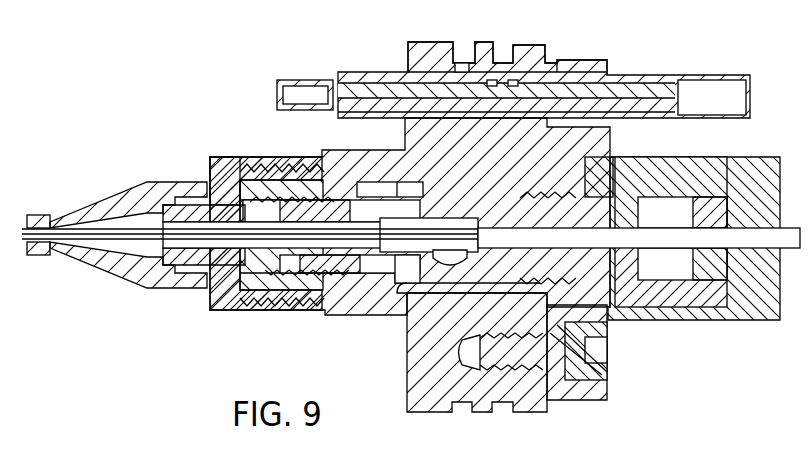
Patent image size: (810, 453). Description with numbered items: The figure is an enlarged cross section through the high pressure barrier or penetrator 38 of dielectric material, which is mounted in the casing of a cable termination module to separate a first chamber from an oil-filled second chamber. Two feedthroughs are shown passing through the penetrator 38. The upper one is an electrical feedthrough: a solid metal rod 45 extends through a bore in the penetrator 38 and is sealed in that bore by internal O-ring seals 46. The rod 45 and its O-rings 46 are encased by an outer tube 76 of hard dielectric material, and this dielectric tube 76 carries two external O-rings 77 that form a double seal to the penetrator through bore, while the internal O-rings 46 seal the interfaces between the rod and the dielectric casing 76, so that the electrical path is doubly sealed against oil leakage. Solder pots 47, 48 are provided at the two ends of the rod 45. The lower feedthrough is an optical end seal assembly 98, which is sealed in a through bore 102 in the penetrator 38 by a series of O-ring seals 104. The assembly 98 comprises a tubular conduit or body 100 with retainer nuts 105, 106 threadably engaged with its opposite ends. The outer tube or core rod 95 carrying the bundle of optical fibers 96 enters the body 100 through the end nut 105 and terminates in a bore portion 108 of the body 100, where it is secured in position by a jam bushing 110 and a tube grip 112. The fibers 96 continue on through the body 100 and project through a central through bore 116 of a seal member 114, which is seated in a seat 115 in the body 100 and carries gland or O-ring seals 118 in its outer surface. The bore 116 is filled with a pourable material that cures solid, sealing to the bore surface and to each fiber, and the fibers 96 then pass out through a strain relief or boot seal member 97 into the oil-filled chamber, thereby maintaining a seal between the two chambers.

The high pressure barrier or penetrator 38 is at (600, 83).
The sealed electrical feedthrough rod 45 is at (395, 97).
The O-ring seals 46 is at (512, 82).
The solder pot 47 is at (712, 80).
The solder pot 48 is at (272, 88).
The outer dielectric tube 76 is at (395, 72).
The external O-rings 77 is at (462, 66).
The outer tube or core rod 95 is at (652, 238).
The optical fibers 96 is at (95, 238).
The strain relief or boot seal member 97 is at (125, 188).
The optical end seal assembly 98 is at (440, 187).
The tubular conduit or body 100 is at (498, 288).
The through bore 102 is at (408, 292).
The O-ring seals 104 is at (425, 190).
The end nut or retainer nut 105 is at (625, 185).
The end nut or retainer nut 106 is at (255, 188).
The bore portion 108 is at (585, 175).
The jam bushing 110 is at (560, 222).
The tube grip 112 is at (523, 268).
The seal member 114 is at (208, 283).
The seat 115 is at (225, 190).
The central through bore 116 is at (282, 248).
The seals 118 is at (297, 275).